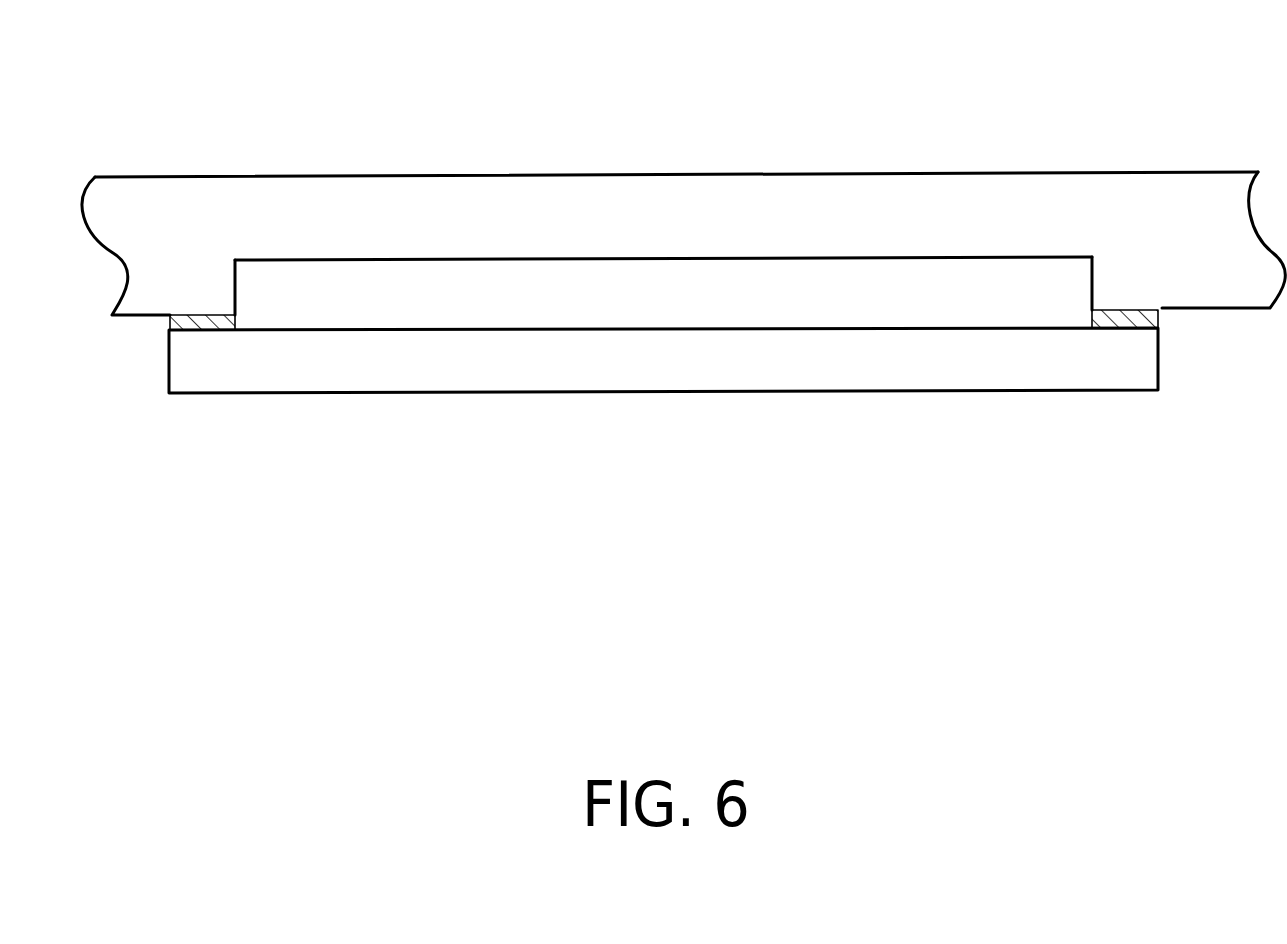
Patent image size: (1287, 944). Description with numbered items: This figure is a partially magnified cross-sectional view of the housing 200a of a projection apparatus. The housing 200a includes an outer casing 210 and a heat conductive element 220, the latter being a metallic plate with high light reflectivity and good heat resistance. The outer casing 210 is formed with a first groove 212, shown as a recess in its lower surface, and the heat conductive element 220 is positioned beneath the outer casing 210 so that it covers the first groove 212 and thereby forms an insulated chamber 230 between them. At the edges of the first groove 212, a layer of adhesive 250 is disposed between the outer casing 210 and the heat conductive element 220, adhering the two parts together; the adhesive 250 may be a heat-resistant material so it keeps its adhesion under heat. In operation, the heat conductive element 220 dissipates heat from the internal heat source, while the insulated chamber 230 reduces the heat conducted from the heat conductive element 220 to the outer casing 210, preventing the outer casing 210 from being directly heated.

The housing 200a is at (1213, 73).
The outer casing 210 is at (1085, 210).
The first groove 212 is at (245, 292).
The heat conductive element 220 is at (1147, 353).
The insulated chamber 230 is at (458, 293).
The adhesive 250 is at (204, 315).